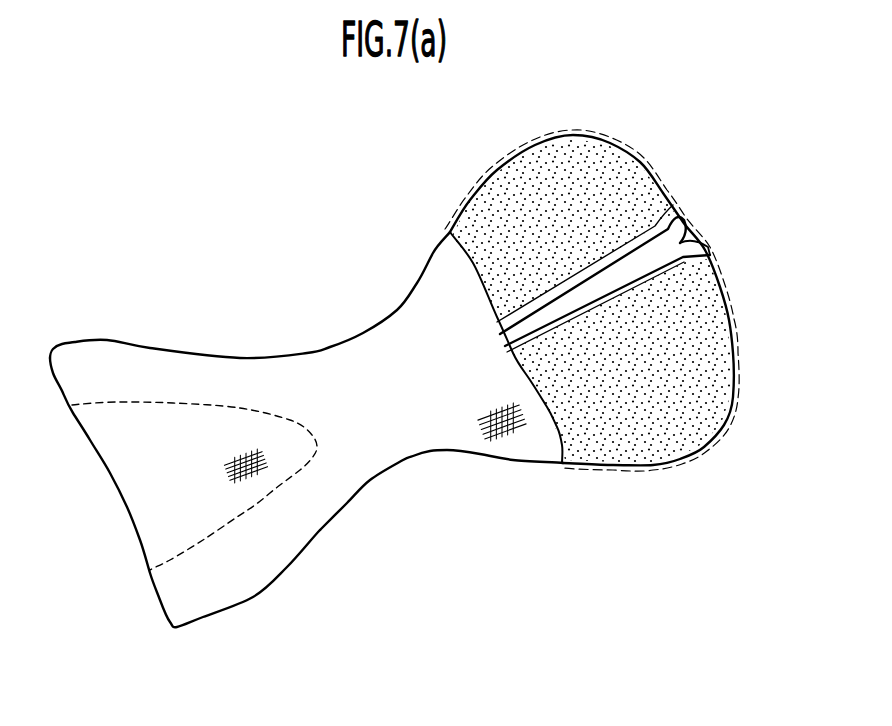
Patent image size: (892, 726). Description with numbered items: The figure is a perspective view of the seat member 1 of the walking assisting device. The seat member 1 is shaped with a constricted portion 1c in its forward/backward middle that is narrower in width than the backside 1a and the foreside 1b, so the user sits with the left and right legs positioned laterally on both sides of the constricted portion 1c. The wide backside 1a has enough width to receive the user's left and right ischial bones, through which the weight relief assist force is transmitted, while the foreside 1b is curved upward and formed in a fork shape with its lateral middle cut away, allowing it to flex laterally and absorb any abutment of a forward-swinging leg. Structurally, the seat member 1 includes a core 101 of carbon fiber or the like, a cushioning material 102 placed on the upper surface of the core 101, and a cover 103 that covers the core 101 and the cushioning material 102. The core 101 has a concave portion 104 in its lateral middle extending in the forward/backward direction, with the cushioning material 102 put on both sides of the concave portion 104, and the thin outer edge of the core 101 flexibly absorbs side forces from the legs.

The seat member 1 is at (394, 417).
The backside 1a is at (679, 466).
The foreside 1b is at (256, 609).
The constricted portion 1c is at (409, 471).
The core 101 is at (657, 222).
The cushioning material 102 is at (577, 145).
The cover 103 is at (507, 445).
The concave portion 104 is at (676, 242).